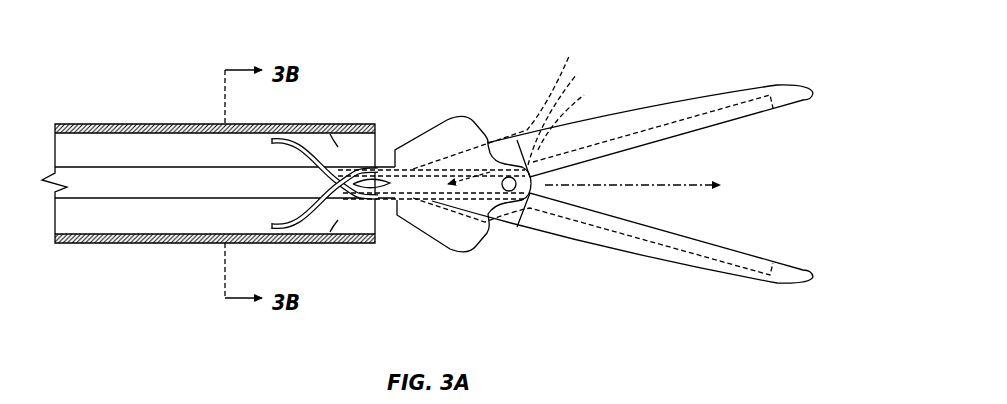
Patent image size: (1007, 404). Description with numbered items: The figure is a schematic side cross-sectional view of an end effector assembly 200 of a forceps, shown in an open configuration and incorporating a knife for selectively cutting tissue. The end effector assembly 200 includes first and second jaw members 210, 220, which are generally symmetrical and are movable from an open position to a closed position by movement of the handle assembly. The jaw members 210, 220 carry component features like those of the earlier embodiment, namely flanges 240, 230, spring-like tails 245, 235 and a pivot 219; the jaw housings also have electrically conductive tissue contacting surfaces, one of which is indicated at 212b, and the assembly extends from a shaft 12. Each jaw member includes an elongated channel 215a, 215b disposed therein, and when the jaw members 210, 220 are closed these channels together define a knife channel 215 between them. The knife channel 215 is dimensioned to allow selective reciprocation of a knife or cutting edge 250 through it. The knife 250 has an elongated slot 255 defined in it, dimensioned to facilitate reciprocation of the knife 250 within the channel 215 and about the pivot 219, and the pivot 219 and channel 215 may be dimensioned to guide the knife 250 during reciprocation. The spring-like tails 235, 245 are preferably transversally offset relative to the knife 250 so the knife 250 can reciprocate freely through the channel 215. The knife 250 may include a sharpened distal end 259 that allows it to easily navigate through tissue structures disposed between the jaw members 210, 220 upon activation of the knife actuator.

The elongated shaft 12 is at (132, 123).
The end effector assembly 200 is at (277, 50).
The first jaw member 210 is at (737, 73).
The shaft segment 212b is at (327, 123).
The knife channel 215 is at (608, 147).
The elongated channel 215a is at (737, 110).
The elongated channel 215b is at (733, 260).
The pivot 219 is at (512, 192).
The second jaw member 220 is at (742, 297).
The flange 230 is at (470, 117).
The spring-like tail 235 is at (320, 217).
The flange 240 is at (470, 247).
The spring-like tail 245 is at (320, 150).
The knife 250 is at (571, 76).
The elongated slot 255 is at (564, 56).
The sharpened distal end 259 is at (578, 97).